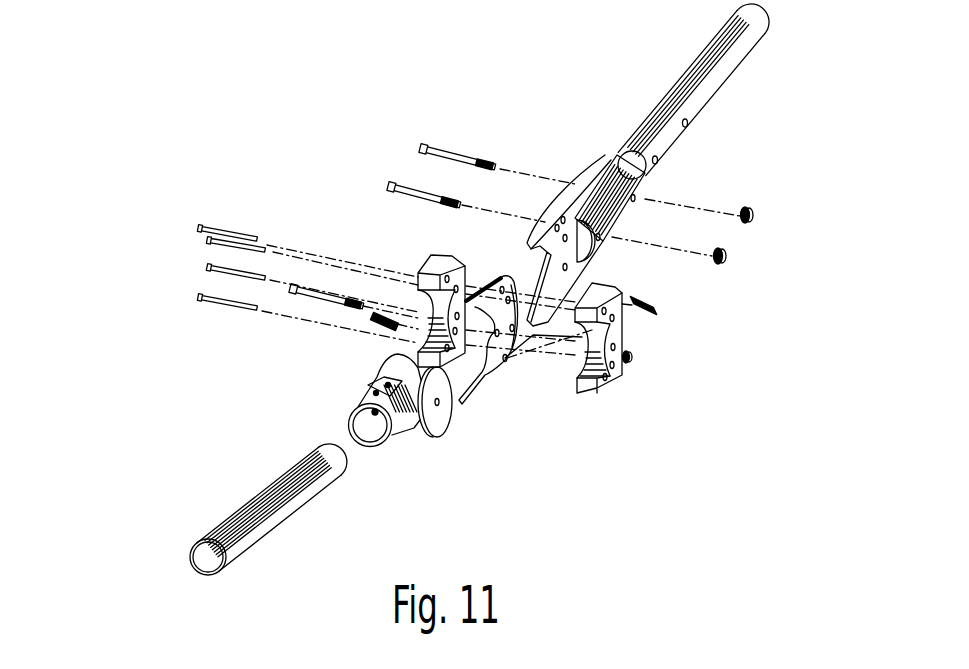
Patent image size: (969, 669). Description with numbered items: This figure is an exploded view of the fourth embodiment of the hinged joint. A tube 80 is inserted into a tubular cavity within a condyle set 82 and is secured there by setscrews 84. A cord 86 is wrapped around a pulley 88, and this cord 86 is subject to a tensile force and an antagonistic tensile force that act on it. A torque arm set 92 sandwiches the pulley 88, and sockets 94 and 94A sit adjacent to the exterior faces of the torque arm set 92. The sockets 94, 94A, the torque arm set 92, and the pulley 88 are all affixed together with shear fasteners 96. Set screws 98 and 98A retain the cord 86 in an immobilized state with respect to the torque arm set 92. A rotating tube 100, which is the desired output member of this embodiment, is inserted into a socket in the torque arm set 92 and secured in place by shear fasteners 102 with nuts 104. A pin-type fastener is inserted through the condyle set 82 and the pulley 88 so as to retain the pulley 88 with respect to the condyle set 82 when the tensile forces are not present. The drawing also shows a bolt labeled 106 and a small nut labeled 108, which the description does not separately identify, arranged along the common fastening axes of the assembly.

The tube 80 is at (277, 507).
The condyle set 82 is at (440, 428).
The setscrews 84 is at (368, 393).
The cord 86 is at (477, 402).
The pulley 88 is at (503, 360).
The torque arm set 92 is at (598, 175).
The socket 94 is at (598, 395).
The socket 94A is at (440, 262).
The shear fasteners 96 is at (217, 272).
The set screw 98 is at (655, 305).
The set screw 98A is at (372, 322).
The rotating tube 100 is at (665, 115).
The shear fasteners 102 is at (433, 150).
The nuts 104 is at (727, 257).
The bolt 106 is at (335, 296).
The nut 108 is at (627, 357).